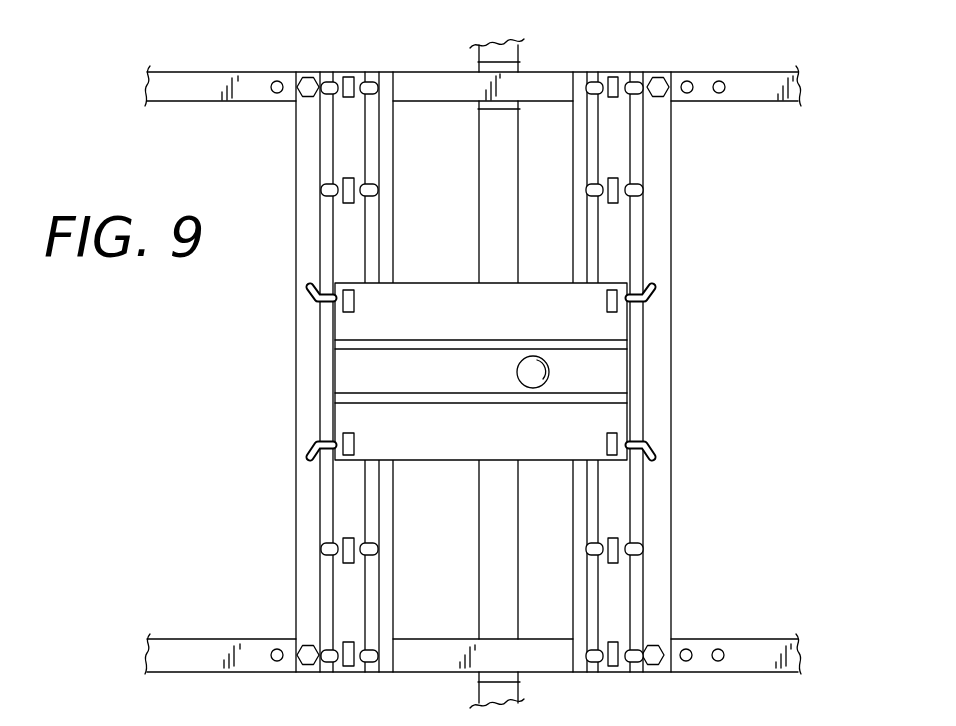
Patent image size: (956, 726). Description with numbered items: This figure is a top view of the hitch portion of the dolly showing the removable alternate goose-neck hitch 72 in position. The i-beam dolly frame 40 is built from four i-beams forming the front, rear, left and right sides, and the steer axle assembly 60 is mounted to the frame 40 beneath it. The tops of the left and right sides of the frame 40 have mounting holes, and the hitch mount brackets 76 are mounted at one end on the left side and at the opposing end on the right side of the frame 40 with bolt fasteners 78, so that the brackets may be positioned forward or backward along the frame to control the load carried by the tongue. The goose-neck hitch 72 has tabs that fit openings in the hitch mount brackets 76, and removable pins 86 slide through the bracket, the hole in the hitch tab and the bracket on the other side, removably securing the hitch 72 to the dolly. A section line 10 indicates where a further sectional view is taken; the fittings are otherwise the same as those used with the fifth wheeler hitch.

The section line 10- 10 is at (253, 448).
The i-beam dolly frame 40 is at (207, 75).
The steer axle assembly 60 is at (477, 217).
The goose-neck hitch 72 is at (620, 346).
The hitch mount brackets 76 is at (296, 170).
The bolt fasteners 78 is at (309, 80).
The removable pins 86 is at (306, 290).